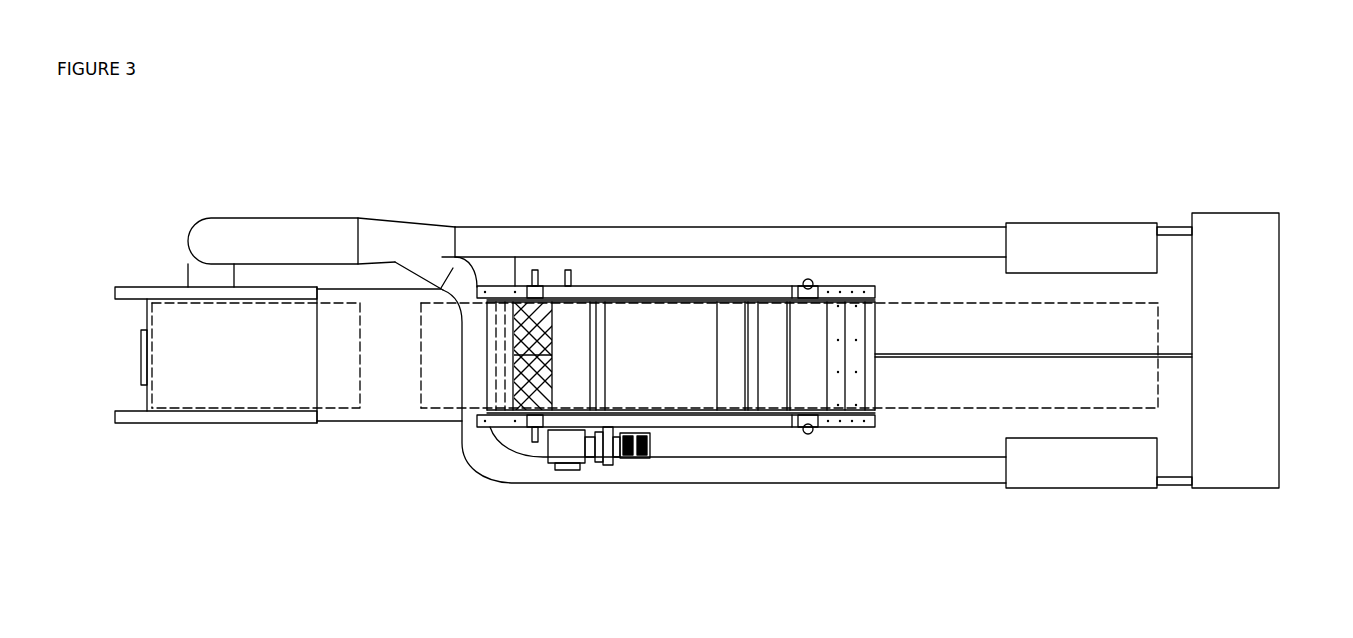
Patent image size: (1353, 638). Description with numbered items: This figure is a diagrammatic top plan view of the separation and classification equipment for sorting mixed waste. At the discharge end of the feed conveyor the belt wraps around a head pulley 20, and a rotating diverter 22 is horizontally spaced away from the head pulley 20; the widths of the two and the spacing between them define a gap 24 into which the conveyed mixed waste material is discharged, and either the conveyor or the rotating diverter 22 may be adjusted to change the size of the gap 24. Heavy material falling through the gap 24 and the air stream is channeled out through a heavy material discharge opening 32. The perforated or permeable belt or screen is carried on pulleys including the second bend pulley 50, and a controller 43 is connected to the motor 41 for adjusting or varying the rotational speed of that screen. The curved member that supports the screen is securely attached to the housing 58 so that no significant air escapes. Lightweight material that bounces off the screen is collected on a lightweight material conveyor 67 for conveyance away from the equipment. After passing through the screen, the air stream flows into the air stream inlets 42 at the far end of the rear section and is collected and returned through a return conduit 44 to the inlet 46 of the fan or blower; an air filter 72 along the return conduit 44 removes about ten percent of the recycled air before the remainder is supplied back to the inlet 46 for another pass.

The head pulley 20 is at (363, 393).
The rotating diverter 22 is at (447, 411).
The gap 24 is at (388, 316).
The heavy material discharge opening 32 is at (408, 404).
The motor 41 is at (586, 464).
The air stream inlets 42 is at (1087, 237).
The controller 43 is at (634, 462).
The return conduit 44 is at (342, 220).
The inlet 46 is at (200, 279).
The second bend pulley 50 is at (815, 327).
The housing 58 is at (217, 423).
The lightweight material conveyor 67 is at (1153, 333).
The air filter 72 is at (220, 232).